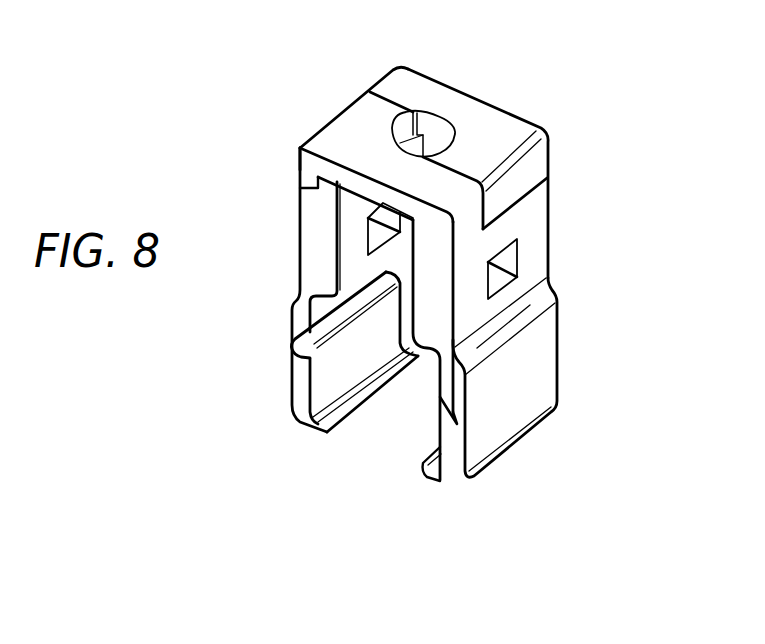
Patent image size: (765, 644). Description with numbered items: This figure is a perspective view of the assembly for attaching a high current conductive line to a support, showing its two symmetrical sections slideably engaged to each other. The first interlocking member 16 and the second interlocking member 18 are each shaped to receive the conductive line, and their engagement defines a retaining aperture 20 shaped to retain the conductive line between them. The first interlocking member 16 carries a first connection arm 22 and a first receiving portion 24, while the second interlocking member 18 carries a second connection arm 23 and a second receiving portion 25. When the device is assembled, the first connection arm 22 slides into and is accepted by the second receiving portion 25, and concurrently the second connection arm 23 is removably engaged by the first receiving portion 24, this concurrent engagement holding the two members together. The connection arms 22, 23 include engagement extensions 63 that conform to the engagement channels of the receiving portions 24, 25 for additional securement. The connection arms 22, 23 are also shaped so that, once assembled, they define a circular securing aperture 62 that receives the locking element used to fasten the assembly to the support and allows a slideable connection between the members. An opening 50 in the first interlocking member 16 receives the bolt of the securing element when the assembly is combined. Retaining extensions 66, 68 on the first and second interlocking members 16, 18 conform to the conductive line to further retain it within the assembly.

The first interlocking member 16 is at (500, 450).
The second interlocking member 18 is at (300, 265).
The retaining aperture 20 is at (370, 430).
The first connection arm 22 is at (350, 105).
The second connection arm 23 is at (486, 101).
The first receiving portion 24 is at (548, 175).
The second receiving portion 25 is at (300, 189).
The opening 50 is at (507, 257).
The securing aperture 62 is at (417, 113).
The engagement extension 63 is at (300, 168).
The retaining extension 66 is at (325, 437).
The retaining extension 68 is at (293, 350).